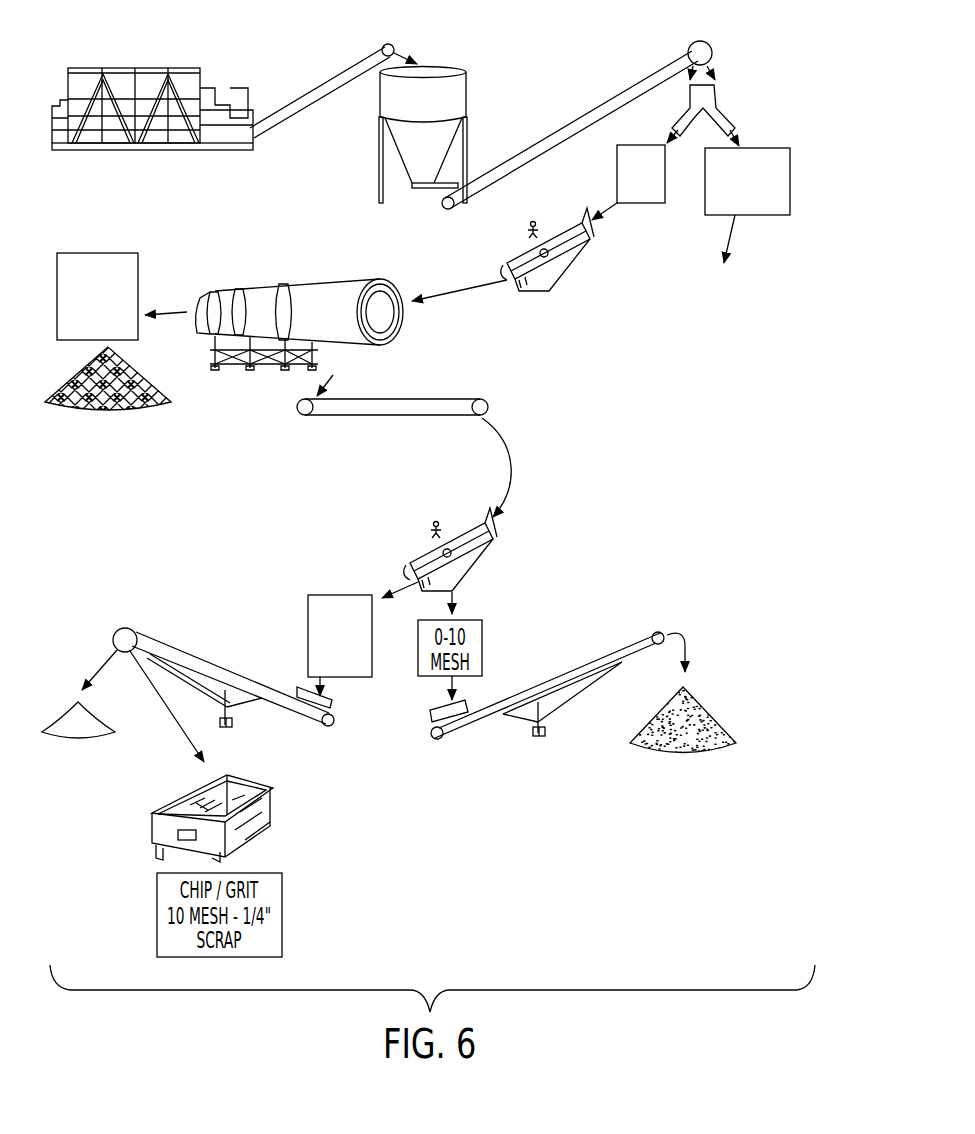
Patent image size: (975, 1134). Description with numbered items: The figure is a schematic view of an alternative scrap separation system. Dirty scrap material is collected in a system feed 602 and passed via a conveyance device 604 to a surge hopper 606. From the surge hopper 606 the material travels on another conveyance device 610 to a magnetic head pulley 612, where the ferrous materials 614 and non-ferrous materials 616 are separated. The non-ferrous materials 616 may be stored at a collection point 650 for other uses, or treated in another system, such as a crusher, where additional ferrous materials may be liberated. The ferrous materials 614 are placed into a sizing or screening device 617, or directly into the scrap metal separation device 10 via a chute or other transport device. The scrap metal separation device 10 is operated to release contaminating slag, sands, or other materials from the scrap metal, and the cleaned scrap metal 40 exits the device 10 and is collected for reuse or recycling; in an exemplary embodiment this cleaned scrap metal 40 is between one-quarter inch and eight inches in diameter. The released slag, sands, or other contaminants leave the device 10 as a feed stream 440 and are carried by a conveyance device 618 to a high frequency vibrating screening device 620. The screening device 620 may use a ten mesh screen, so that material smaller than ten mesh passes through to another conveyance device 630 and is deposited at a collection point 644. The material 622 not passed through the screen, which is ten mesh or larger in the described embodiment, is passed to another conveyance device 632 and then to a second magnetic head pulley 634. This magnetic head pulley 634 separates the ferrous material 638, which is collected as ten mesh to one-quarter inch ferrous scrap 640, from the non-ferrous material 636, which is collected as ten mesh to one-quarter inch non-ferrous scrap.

The system feed 602 is at (130, 67).
The conveyance device 604 is at (355, 66).
The surge hopper 606 is at (440, 67).
The conveyance device 610 is at (623, 88).
The magnetic head pulley 612 is at (710, 42).
The ferrous materials 614 is at (615, 170).
The non-ferrous materials 616 is at (770, 147).
The collection point 650 is at (727, 233).
The sizing or screening device 617 is at (570, 273).
The scrap metal separation device 10 is at (405, 275).
The cleaned scrap metal 40 is at (168, 312).
The feed stream 440 is at (333, 375).
The conveyance device 618 is at (436, 399).
The high frequency screening device 620 is at (488, 538).
The material not passed through the screen 622 is at (331, 594).
The conveyance device 630 is at (563, 668).
The collection point 644 is at (713, 724).
The magnetic head pulley 634 is at (119, 628).
The non-ferrous material 636 is at (68, 705).
The ferrous material 638 is at (190, 742).
The conveyance device 632 is at (273, 705).
The ten mesh to one-quarter inch ferrous scrap 640 is at (267, 820).